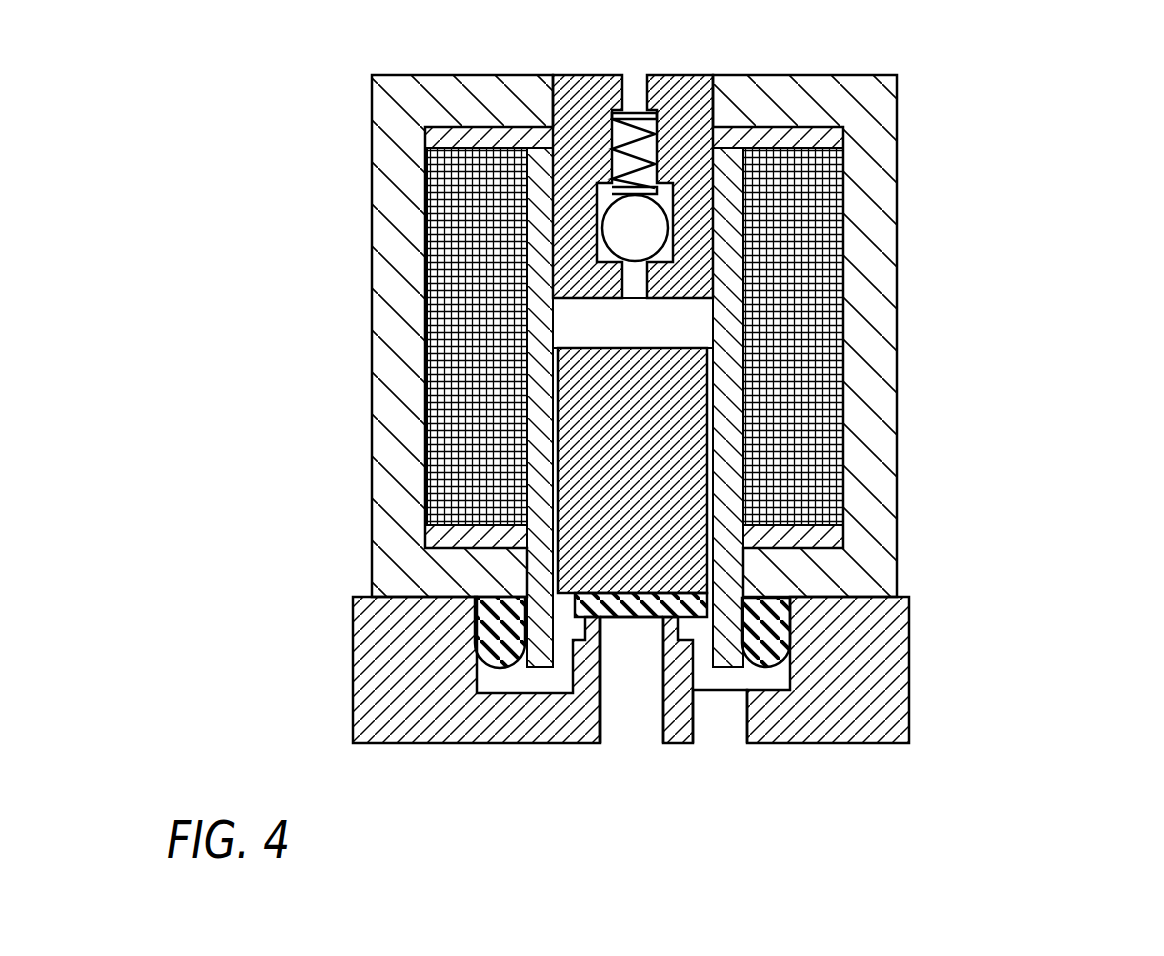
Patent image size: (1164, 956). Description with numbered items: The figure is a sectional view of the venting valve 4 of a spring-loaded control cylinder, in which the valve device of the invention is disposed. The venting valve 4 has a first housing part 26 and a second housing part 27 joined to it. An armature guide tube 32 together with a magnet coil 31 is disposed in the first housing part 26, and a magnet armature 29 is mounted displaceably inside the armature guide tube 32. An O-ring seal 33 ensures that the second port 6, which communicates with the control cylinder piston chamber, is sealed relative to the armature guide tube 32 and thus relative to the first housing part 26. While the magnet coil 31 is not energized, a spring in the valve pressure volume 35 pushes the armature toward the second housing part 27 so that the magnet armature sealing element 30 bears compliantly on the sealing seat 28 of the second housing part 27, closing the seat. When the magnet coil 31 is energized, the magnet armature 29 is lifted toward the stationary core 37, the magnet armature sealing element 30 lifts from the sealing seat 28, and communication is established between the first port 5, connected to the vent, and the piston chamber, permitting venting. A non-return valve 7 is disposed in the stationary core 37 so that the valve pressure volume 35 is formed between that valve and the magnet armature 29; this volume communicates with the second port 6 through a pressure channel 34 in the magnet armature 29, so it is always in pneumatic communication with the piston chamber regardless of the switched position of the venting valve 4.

The venting valve 4 is at (1078, 217).
The first port 5 is at (648, 728).
The second port 6 is at (738, 732).
The non-return valve 7 is at (583, 224).
The first housing part 26 is at (873, 90).
The second housing part 27 is at (888, 698).
The sealing seat 28 is at (660, 617).
The magnet armature 29 is at (583, 456).
The magnet armature sealing element 30 is at (670, 598).
The magnet coil 31 is at (803, 438).
The armature guide tube 32 is at (537, 563).
The O-ring seal 33 is at (762, 656).
The pressure channel 34 is at (743, 375).
The valve pressure volume 35 is at (590, 325).
The stationary core 37 is at (680, 92).